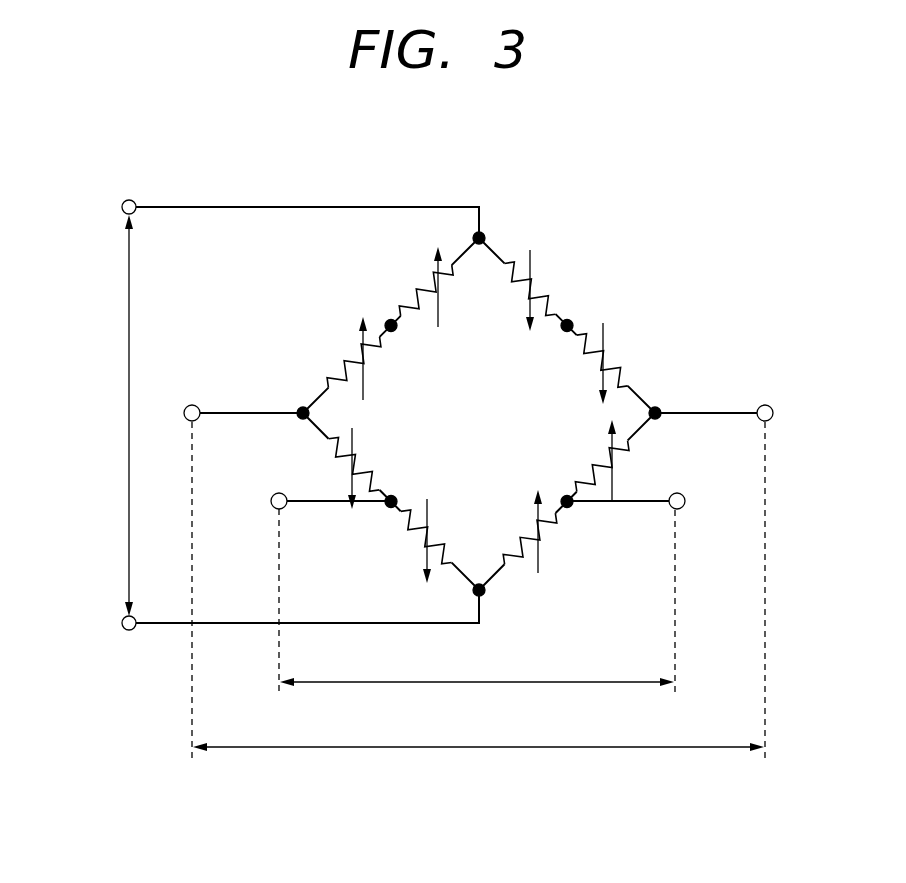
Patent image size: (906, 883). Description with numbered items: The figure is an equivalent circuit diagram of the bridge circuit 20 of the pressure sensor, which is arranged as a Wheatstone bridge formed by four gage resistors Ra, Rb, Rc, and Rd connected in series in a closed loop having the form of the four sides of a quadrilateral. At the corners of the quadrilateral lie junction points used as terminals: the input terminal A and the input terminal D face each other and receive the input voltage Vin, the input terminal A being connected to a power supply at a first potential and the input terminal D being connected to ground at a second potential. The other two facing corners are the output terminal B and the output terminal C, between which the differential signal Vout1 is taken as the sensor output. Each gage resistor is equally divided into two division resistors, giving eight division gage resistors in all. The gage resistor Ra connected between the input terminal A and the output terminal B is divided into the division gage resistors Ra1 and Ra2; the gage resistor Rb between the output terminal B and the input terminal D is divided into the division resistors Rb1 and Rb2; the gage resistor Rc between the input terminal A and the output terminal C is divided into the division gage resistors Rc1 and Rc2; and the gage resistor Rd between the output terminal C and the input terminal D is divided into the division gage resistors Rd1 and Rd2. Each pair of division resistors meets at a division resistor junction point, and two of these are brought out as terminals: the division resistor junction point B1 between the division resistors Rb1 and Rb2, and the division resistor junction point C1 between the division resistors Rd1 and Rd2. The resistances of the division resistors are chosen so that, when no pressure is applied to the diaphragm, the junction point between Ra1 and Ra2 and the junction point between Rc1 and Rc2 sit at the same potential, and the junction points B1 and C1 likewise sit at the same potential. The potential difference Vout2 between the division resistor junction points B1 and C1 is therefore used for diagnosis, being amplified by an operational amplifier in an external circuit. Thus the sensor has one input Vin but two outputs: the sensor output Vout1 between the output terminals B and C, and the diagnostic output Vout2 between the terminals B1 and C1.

The bridge circuit 20 is at (529, 220).
The input terminal A is at (127, 200).
The output terminal B is at (190, 404).
The output terminal C is at (767, 404).
The input terminal D is at (129, 631).
The division resistor junction point B1 is at (277, 492).
The division resistor junction point C1 is at (679, 493).
The gage resistor Ra is at (370, 325).
The division gage resistor Ra1 is at (407, 287).
The division gage resistor Ra2 is at (333, 358).
The gage resistor Rb is at (391, 490).
The division resistor Rb1 is at (365, 463).
The division resistor Rb2 is at (428, 526).
The gage resistor Rc is at (592, 325).
The division gage resistor Rc1 is at (552, 290).
The division gage resistor Rc2 is at (625, 363).
The gage resistor Rd is at (567, 490).
The division gage resistor Rd1 is at (590, 459).
The division gage resistor Rd2 is at (530, 513).
The input voltage Vin is at (110, 415).
The differential signal Vout1 is at (478, 591).
The potential difference Vout2 is at (477, 602).